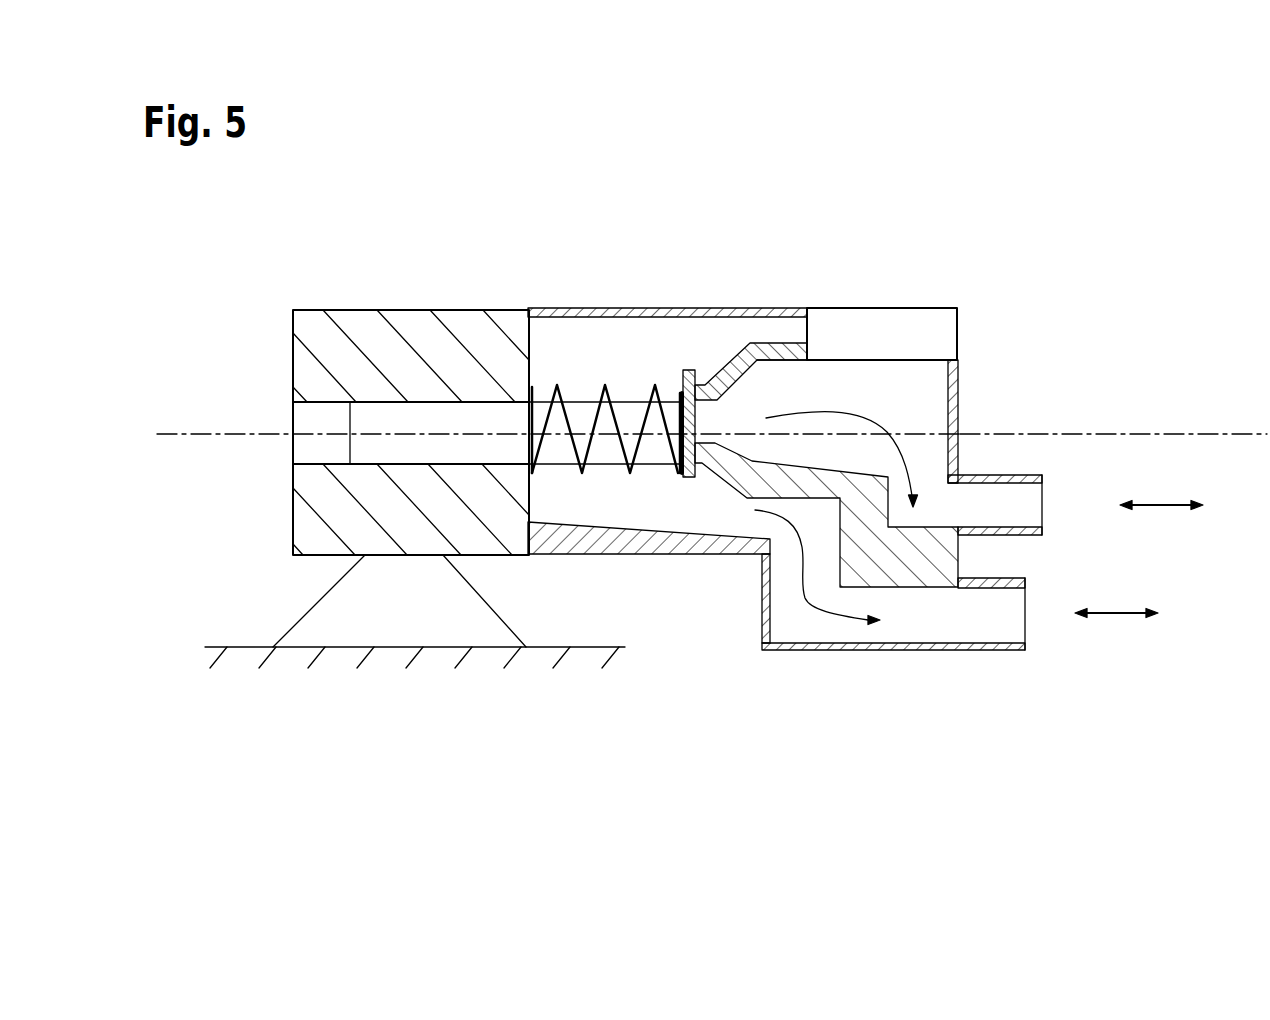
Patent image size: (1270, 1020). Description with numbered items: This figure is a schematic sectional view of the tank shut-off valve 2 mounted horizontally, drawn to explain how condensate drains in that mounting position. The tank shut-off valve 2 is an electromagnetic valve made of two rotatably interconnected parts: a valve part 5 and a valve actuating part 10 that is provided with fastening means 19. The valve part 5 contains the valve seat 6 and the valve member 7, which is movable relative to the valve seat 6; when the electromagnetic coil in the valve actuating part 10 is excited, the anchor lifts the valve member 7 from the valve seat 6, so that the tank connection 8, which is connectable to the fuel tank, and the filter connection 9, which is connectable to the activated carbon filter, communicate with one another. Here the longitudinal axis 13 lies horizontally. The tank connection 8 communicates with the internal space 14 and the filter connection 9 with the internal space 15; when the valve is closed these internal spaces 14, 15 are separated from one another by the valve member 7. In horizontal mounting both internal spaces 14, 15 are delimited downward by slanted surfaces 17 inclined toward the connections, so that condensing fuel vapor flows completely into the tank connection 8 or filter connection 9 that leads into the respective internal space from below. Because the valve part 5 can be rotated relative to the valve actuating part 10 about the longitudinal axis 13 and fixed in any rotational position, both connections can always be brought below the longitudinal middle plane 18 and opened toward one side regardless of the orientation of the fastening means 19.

The tank shut-off valve 2 is at (582, 278).
The valve part 5 is at (808, 277).
The valve seat 6 is at (697, 387).
The valve member 7 is at (683, 370).
The tank connection 8 is at (1015, 493).
The filter connection 9 is at (973, 608).
The valve actuating part 10 is at (413, 300).
The longitudinal axis 13 is at (205, 434).
The internal space 14 is at (884, 395).
The internal space 15 is at (687, 508).
The slanted surfaces 17 is at (590, 515).
The longitudinal middle plane 18 is at (1200, 434).
The fastening means 19 is at (323, 612).